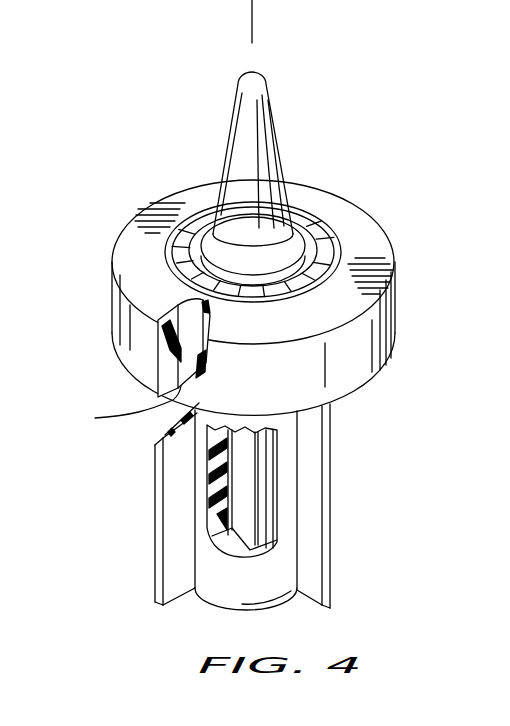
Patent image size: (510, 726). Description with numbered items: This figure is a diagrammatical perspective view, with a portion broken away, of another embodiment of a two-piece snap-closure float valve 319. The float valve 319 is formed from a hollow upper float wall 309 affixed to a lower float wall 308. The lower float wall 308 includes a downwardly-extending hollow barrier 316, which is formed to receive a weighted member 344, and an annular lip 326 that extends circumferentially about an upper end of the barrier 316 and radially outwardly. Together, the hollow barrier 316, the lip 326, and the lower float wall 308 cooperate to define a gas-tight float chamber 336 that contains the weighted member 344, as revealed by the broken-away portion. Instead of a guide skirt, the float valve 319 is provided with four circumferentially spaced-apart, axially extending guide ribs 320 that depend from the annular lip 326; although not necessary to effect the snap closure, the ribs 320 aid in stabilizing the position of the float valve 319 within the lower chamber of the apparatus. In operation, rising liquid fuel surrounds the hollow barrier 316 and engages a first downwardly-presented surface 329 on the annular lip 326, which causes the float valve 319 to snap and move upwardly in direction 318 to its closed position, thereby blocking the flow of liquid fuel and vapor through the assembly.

The direction 318 is at (252, 24).
The float valve 319 is at (156, 181).
The hollow upper float wall 309 is at (334, 209).
The lower float wall 308 is at (152, 358).
The weighted member 344 is at (212, 332).
The float chamber 336 is at (186, 338).
The annular lip 326 is at (117, 408).
The first downwardly-presented surface 329 is at (163, 423).
The hollow barrier 316 is at (290, 497).
The guide ribs 320 is at (180, 555).